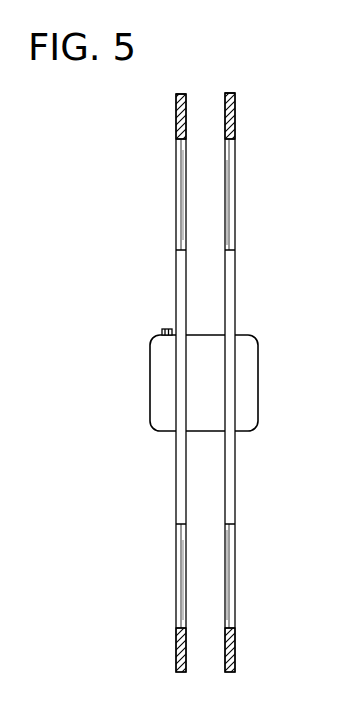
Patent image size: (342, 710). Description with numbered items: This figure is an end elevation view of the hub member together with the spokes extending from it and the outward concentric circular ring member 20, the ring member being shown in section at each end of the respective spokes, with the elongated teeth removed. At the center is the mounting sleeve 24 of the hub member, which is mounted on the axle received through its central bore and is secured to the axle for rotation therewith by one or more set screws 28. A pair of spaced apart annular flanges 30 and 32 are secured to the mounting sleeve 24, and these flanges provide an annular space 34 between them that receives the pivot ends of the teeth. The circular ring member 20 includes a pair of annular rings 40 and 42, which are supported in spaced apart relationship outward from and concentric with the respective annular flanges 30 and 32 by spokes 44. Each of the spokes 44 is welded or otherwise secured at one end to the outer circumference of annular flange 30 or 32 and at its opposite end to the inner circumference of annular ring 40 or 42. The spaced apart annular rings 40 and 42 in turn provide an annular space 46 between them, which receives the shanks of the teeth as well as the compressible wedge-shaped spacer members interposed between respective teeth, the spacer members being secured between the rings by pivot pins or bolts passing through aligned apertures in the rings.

The circular ring member 20 is at (176, 132).
The mounting sleeve 24 is at (150, 396).
The set screw 28 is at (163, 329).
The annular flange 30 is at (176, 478).
The annular flange 32 is at (236, 290).
The annular space 34 is at (201, 508).
The annular ring 40 is at (176, 95).
The annular ring 42 is at (230, 93).
The spokes 44 is at (176, 196).
The annular space 46 is at (201, 100).